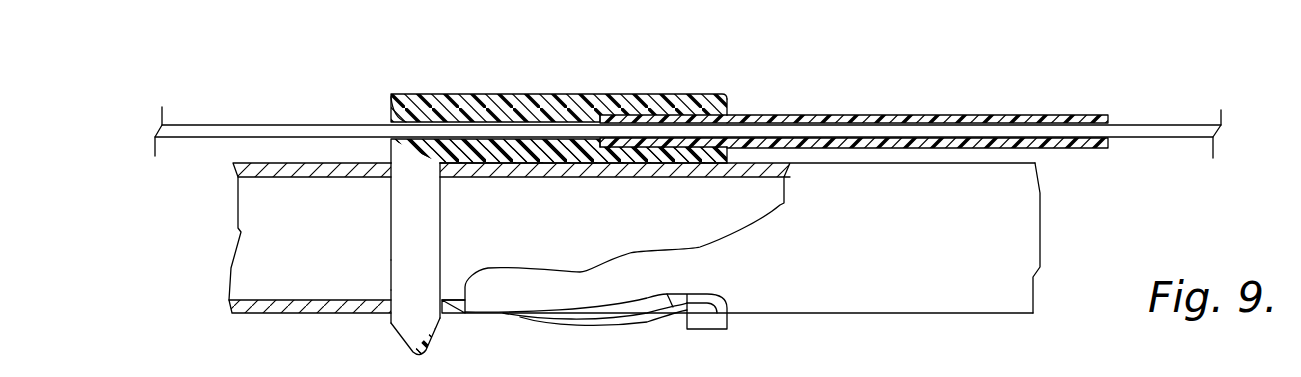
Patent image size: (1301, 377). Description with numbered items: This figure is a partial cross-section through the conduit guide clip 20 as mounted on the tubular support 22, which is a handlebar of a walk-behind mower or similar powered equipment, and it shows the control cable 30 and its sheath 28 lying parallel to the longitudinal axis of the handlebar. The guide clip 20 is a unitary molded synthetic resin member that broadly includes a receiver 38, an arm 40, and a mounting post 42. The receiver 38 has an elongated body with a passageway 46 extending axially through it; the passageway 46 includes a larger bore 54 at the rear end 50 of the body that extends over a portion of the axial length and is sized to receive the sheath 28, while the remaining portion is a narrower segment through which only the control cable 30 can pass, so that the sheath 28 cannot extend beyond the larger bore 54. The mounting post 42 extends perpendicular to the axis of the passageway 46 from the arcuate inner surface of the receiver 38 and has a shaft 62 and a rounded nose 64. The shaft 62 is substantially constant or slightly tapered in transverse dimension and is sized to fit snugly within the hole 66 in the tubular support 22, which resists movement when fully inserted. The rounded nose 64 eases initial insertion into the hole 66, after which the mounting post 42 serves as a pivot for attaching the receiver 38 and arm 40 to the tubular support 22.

The conduit guide clip 20 is at (710, 194).
The tubular support 22 is at (250, 313).
The sheath 28 is at (810, 115).
The control cable 30 is at (258, 124).
The receiver 38 is at (560, 95).
The arm 40 is at (620, 328).
The mounting post 42 is at (392, 273).
The passageway 46 is at (391, 97).
The rear end 50 is at (727, 102).
The larger bore 54 is at (690, 93).
The shaft 62 is at (400, 218).
The rounded nose 64 is at (403, 338).
The hole 66 is at (447, 310).